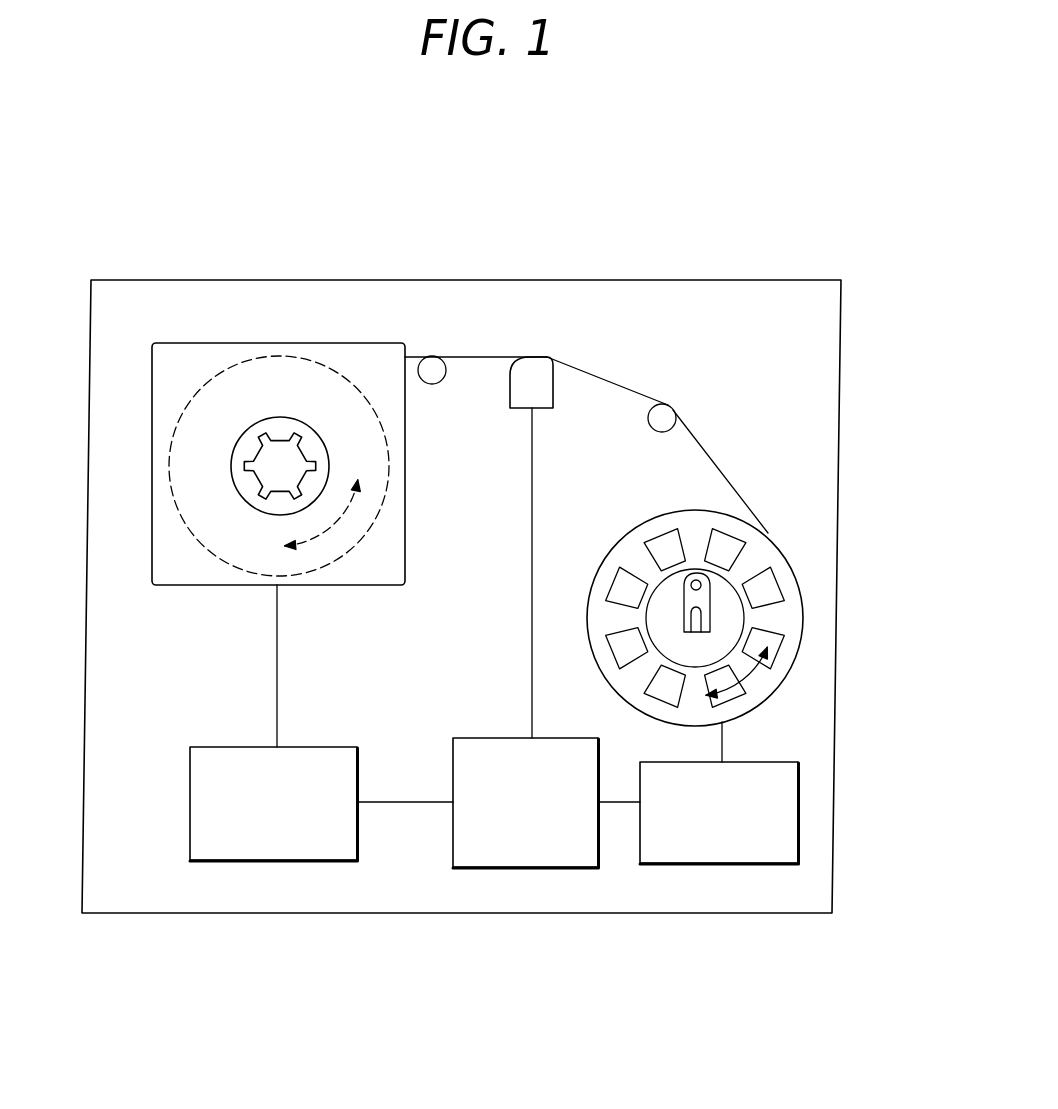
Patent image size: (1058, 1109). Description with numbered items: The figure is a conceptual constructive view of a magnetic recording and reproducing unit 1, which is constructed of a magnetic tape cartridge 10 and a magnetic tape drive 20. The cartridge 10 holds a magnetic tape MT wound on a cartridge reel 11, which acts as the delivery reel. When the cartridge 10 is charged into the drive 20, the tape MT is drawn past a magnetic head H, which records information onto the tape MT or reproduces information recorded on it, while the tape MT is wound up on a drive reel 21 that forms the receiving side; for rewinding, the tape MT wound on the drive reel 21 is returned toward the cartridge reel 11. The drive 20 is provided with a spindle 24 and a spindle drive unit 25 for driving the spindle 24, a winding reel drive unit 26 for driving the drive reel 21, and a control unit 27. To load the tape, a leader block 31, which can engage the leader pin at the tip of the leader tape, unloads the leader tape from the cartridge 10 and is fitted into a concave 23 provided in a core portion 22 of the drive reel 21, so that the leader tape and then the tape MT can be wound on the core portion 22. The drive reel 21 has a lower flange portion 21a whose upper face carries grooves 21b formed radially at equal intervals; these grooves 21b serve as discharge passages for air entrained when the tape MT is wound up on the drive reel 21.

The magnetic recording and reproducing unit 1 is at (657, 184).
The magnetic tape cartridge 10 is at (287, 343).
The cartridge reel 11 is at (284, 423).
The magnetic tape drive 20 is at (701, 279).
The drive reel 21 is at (773, 690).
The lower flange portion 21a is at (670, 513).
The grooves 21b is at (662, 552).
The core portion 22 is at (668, 632).
The concave 23 is at (710, 594).
The spindle 24 is at (277, 453).
The spindle drive unit 25 is at (270, 860).
The winding reel drive unit 26 is at (722, 863).
The control unit 27 is at (507, 867).
The leader block 31 is at (706, 596).
The magnetic head H is at (537, 372).
The magnetic tape MT is at (713, 457).